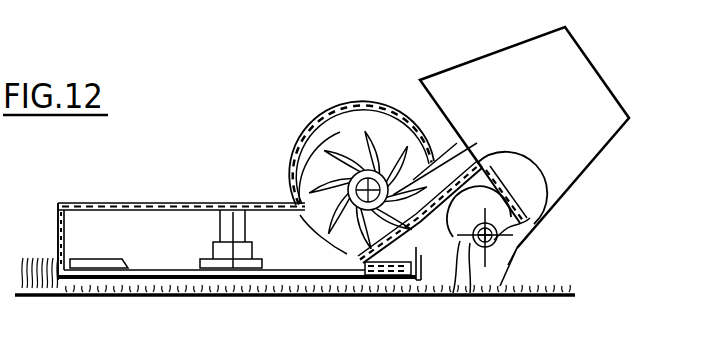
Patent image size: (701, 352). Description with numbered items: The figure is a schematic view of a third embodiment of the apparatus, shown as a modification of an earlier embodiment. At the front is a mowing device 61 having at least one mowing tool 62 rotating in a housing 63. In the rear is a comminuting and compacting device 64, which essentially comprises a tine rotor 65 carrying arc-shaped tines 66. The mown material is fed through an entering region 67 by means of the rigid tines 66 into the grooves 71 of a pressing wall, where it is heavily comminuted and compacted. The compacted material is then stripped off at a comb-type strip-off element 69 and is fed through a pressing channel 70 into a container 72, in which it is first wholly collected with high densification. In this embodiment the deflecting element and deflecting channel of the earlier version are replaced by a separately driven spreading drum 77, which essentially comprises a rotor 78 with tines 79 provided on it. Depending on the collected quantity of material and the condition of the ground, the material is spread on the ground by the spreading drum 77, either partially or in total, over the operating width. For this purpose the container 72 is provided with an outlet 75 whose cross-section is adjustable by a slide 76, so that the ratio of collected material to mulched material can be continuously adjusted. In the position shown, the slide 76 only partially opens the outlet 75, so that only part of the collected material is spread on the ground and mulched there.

The mowing device 61 is at (195, 205).
The mowing tool 62 is at (93, 258).
The housing 63 is at (58, 202).
The comminuting and compacting device 64 is at (313, 141).
The tine rotor 65 is at (338, 150).
The arc-shaped tines 66 is at (331, 131).
The entering region 67 is at (345, 252).
The comb-type strip-off element 69 is at (432, 147).
The pressing channel 70 is at (433, 143).
The grooves 71 is at (418, 298).
The container 72 is at (512, 43).
The outlet 75 is at (520, 223).
The slide 76 is at (521, 190).
The spreading drum 77 is at (510, 252).
The rotor 78 is at (488, 258).
The tines 79 is at (463, 272).